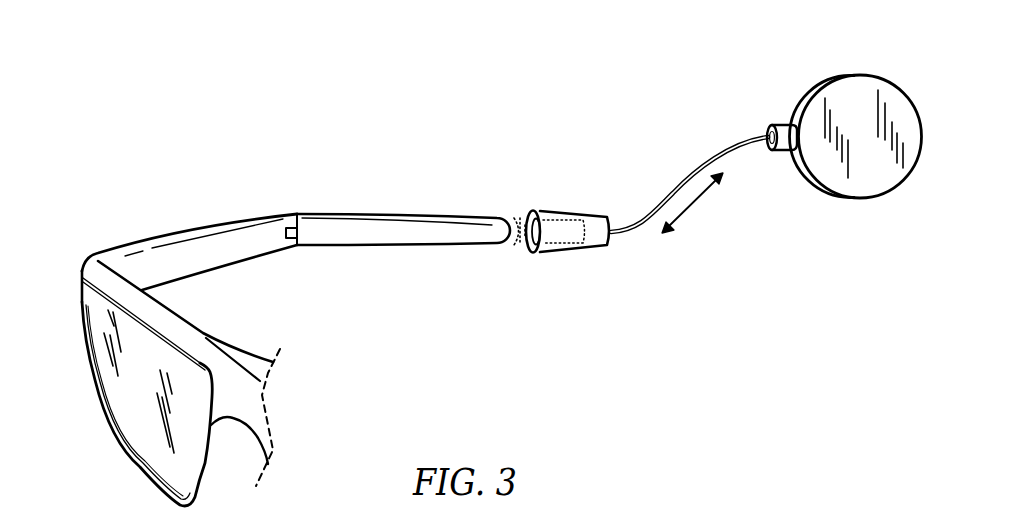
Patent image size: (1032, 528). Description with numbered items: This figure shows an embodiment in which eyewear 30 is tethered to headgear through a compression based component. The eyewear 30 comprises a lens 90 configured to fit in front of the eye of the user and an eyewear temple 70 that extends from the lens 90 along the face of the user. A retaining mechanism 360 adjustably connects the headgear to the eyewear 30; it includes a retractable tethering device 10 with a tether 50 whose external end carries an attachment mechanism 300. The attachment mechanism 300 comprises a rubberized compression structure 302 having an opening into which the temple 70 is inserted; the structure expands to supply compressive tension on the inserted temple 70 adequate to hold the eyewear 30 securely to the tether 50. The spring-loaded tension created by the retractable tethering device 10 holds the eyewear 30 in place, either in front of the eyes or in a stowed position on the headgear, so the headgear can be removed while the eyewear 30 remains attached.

The retractable tethering device 10 is at (868, 200).
The eyewear 30 is at (363, 394).
The tether 50 is at (708, 155).
The eyewear temple 70 is at (229, 217).
The lens 90 is at (95, 406).
The attachment mechanism 300 is at (512, 261).
The rubberized compression structure 302 is at (597, 244).
The retaining mechanism 360 is at (918, 70).